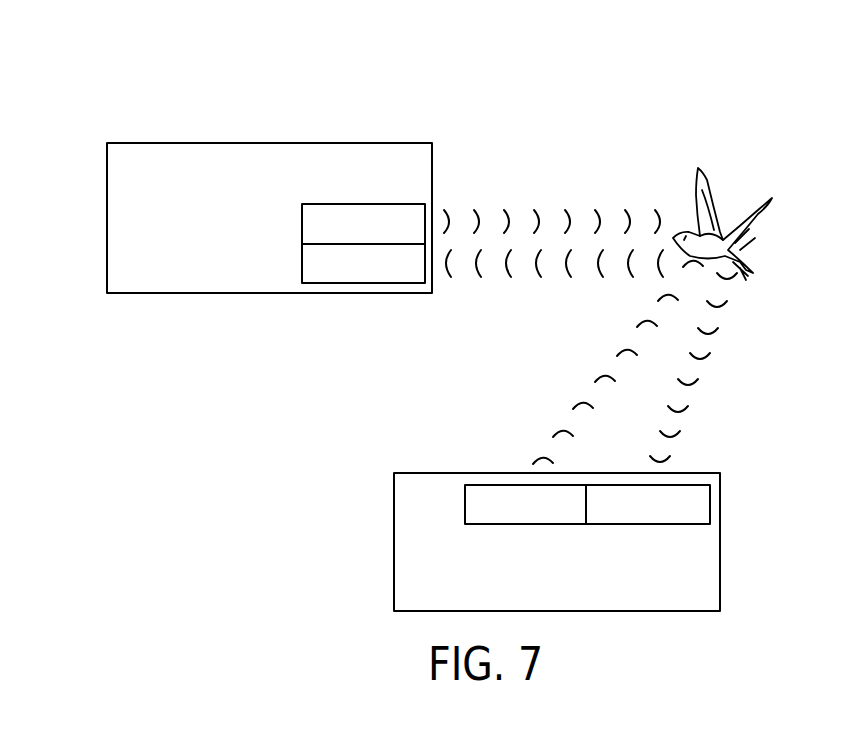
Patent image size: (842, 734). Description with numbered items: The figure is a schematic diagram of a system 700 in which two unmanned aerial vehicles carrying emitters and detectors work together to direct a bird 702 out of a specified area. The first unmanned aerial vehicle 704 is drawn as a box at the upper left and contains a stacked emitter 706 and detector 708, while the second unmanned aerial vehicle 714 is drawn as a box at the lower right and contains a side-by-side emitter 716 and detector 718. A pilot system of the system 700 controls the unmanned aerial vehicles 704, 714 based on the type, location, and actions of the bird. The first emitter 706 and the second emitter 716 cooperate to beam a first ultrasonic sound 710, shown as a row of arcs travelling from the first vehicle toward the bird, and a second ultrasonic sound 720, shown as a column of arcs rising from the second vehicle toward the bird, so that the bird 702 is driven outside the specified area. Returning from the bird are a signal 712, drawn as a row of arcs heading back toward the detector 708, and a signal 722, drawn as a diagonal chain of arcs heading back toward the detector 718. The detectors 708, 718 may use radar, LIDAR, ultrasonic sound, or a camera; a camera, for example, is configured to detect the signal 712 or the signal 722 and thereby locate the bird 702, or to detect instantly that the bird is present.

The system 700 is at (377, 100).
The bird 702 is at (745, 206).
The first unmanned aerial vehicle 704 is at (107, 222).
The emitter 706 is at (302, 226).
The detector 708 is at (363, 284).
The first ultrasonic sound 710 is at (601, 212).
The signal 712 is at (567, 272).
The second unmanned aerial vehicle 714 is at (394, 535).
The emitter 716 is at (710, 501).
The detector 718 is at (476, 485).
The second ultrasonic sound 720 is at (710, 360).
The signal 722 is at (593, 408).